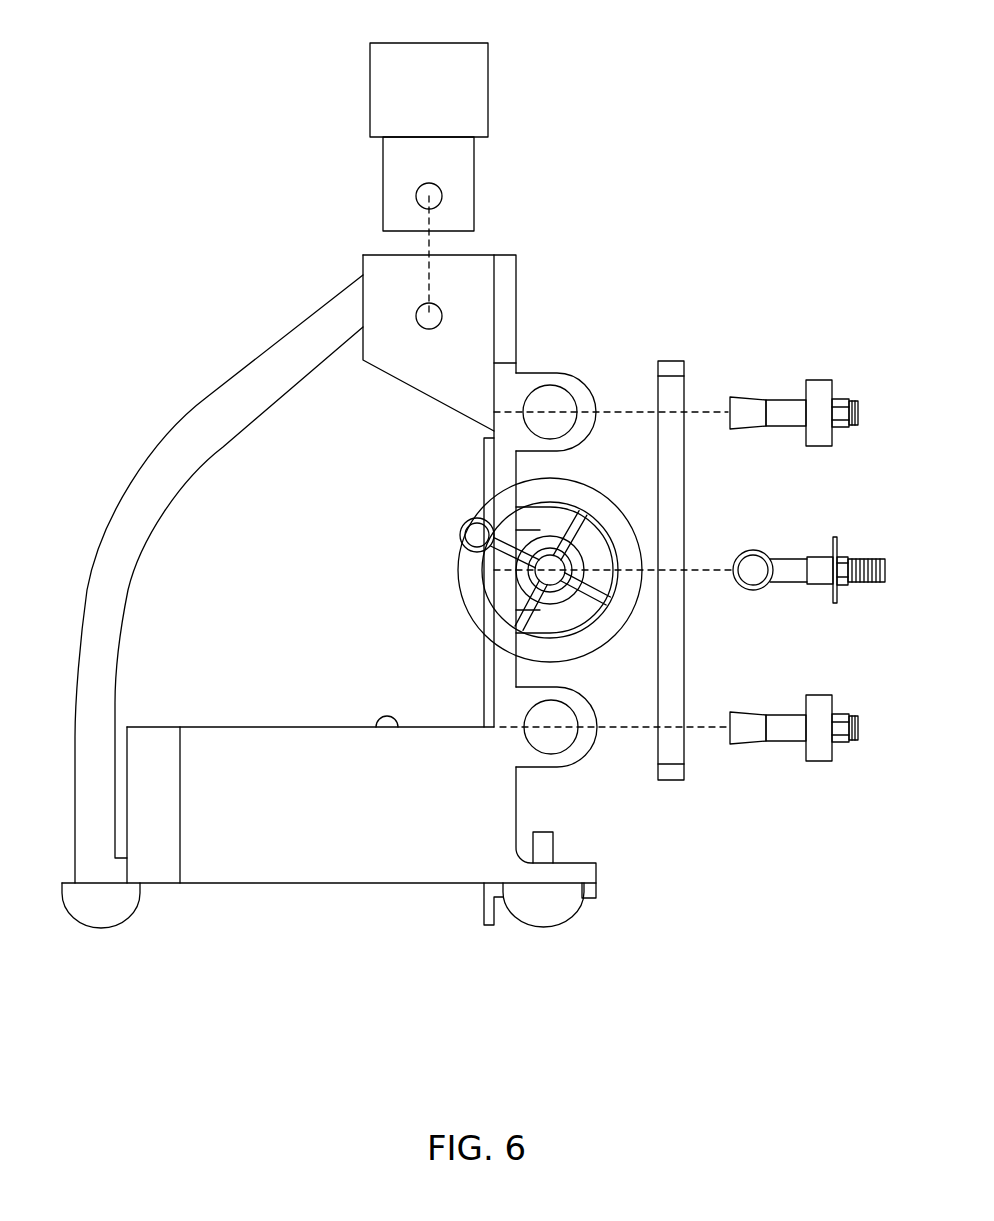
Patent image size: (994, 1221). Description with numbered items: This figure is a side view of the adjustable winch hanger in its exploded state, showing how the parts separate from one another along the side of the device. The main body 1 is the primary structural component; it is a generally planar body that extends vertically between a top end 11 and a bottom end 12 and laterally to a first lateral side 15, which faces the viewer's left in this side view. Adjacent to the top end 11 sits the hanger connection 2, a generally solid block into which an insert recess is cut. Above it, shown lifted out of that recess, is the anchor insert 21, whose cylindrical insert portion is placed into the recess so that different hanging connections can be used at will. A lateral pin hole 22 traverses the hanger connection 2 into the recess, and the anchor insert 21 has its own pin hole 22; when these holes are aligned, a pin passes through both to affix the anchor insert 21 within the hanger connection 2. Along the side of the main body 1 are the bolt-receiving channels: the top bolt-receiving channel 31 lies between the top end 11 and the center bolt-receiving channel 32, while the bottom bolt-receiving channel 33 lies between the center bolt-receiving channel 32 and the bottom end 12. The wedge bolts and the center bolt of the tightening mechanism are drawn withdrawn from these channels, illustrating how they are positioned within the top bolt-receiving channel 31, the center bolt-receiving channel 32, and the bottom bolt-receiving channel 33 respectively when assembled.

The main body 1 is at (506, 302).
The hanger connection 2 is at (398, 372).
The top end 11 is at (526, 237).
The bottom end 12 is at (503, 860).
The first lateral side 15 is at (498, 462).
The anchor insert 21 is at (378, 86).
The pin hole 22 is at (416, 196).
The top bolt-receiving channel 31 is at (575, 378).
The center bolt-receiving channel 32 is at (583, 543).
The bottom bolt-receiving channel 33 is at (585, 708).